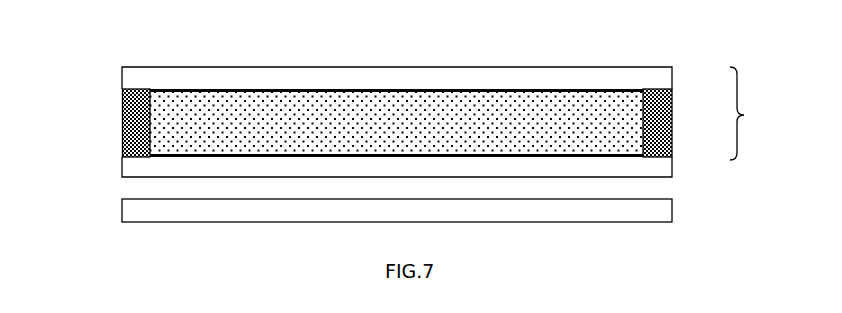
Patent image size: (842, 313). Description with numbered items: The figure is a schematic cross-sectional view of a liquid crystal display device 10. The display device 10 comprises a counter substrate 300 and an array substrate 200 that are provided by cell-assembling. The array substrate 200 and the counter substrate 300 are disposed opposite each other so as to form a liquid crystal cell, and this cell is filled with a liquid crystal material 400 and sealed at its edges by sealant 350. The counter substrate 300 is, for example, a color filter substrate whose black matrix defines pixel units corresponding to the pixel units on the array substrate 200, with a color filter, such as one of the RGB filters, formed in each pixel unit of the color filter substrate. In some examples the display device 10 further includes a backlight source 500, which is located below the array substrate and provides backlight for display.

The display device 10 is at (752, 113).
The array substrate 200 is at (618, 163).
The counter substrate 300 is at (632, 78).
The sealant 350 is at (123, 120).
The liquid crystal material 400 is at (267, 123).
The backlight source 500 is at (625, 207).